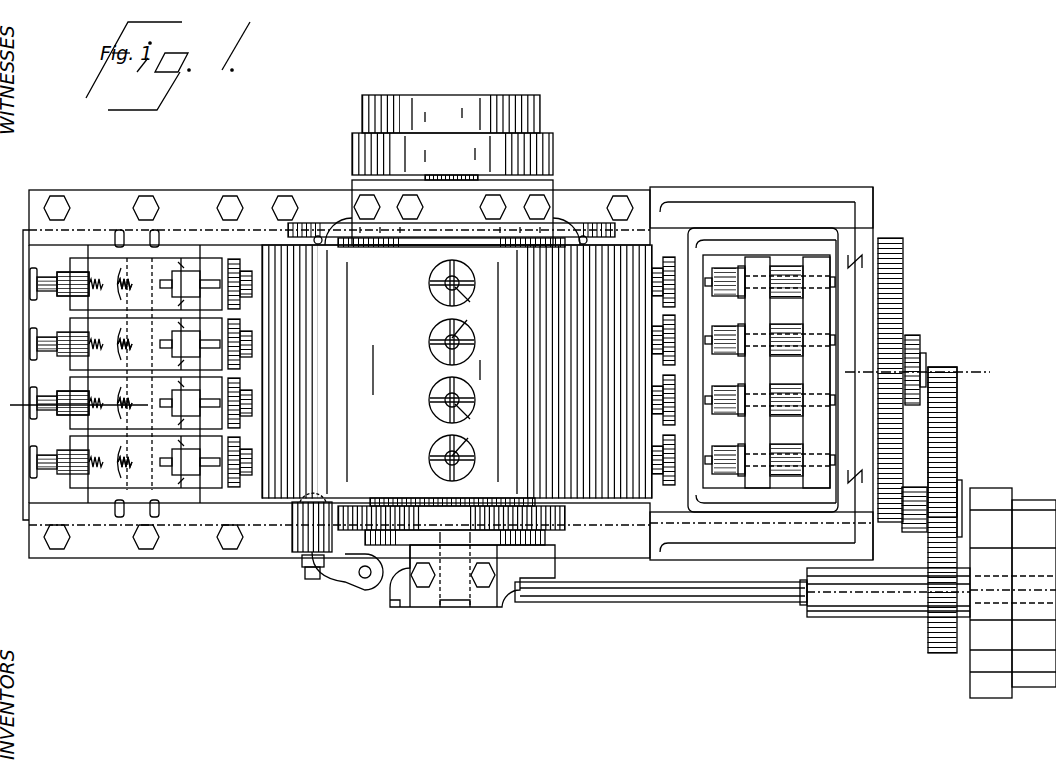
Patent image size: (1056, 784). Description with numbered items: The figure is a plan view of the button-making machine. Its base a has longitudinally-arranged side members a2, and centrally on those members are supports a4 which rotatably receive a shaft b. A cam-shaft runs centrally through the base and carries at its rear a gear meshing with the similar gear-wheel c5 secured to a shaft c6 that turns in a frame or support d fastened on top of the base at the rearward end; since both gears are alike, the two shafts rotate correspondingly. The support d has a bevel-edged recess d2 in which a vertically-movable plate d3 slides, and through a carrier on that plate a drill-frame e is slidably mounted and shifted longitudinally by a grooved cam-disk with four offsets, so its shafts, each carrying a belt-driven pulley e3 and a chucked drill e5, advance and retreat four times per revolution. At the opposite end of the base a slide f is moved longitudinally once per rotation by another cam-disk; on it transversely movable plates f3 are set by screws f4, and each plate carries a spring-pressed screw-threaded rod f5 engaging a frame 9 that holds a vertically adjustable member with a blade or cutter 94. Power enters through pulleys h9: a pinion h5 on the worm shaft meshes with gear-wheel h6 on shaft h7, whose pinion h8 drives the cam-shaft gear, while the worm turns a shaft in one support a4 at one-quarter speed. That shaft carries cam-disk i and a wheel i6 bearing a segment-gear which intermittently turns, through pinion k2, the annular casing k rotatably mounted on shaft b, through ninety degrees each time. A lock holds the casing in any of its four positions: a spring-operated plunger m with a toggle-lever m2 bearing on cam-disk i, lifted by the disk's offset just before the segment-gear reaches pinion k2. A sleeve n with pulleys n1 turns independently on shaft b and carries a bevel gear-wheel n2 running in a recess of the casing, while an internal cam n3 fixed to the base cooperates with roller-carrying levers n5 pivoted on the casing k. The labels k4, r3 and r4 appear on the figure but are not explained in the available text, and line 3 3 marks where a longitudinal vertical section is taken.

The base a is at (336, 363).
The side members a2 is at (716, 197).
The supports a4 is at (452, 390).
The shaft b is at (462, 608).
The section line 3 is at (504, 389).
The gear-wheel c5 is at (908, 326).
The shaft c6 is at (926, 362).
The frame or support d is at (864, 196).
The bevel-edged recess d2 is at (858, 256).
The vertically-movable plate d3 is at (880, 308).
The drill-frame e is at (769, 371).
The pulley e3 is at (786, 334).
The drill e5 is at (706, 338).
The slide f is at (27, 446).
The plates f3 is at (70, 270).
The screws f4 is at (152, 229).
The screw-threaded rod f5 is at (92, 302).
The frame 9 is at (135, 363).
The blade or cutter 94 is at (186, 373).
The pinion h5 is at (928, 640).
The gear-wheel h6 is at (958, 466).
The shaft h7 is at (912, 533).
The pinion h8 is at (898, 538).
The pulleys h9 is at (1003, 500).
The cam-disk i is at (405, 538).
The wheel i6 is at (560, 522).
The annular casing k is at (457, 371).
The pinion k2 is at (470, 515).
The rod k4 is at (674, 602).
The spring-operated plunger m is at (308, 580).
The toggle-lever m2 is at (347, 585).
The sleeve n is at (446, 175).
The pulleys n1 is at (362, 122).
The bevel gear-wheel n2 is at (398, 243).
The internal cam n3 is at (450, 232).
The levers n5 is at (588, 238).
The gear r3 is at (236, 258).
The key r4 is at (471, 371).